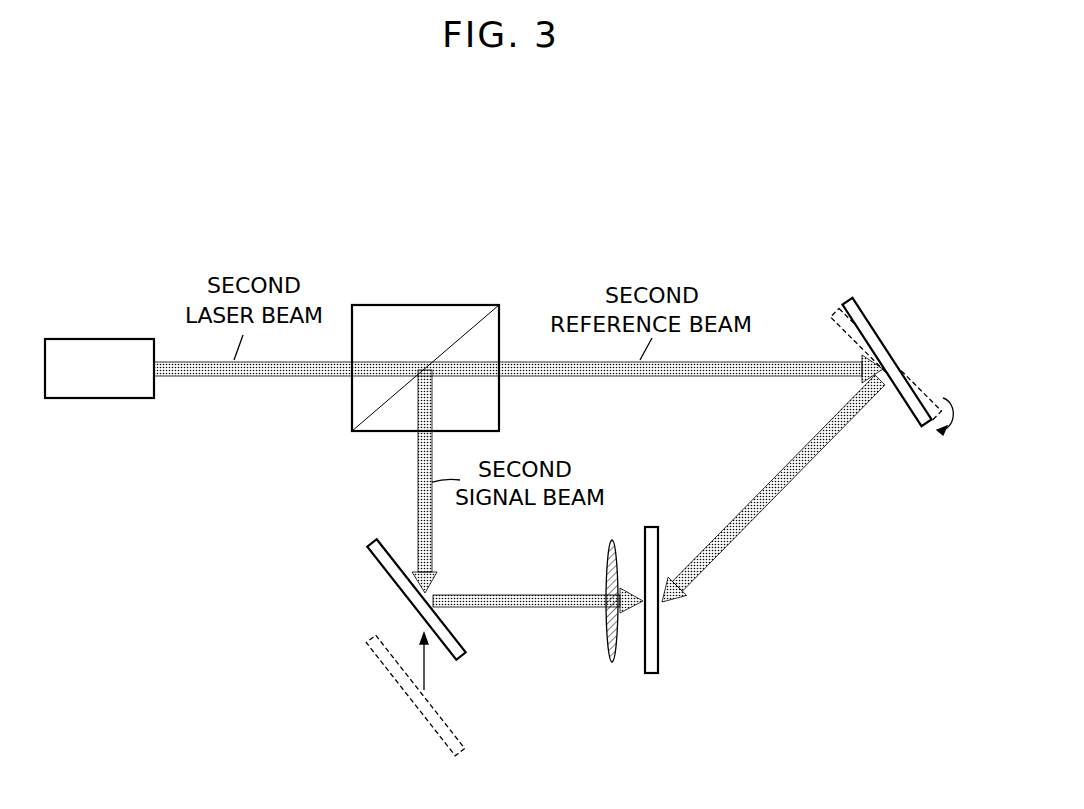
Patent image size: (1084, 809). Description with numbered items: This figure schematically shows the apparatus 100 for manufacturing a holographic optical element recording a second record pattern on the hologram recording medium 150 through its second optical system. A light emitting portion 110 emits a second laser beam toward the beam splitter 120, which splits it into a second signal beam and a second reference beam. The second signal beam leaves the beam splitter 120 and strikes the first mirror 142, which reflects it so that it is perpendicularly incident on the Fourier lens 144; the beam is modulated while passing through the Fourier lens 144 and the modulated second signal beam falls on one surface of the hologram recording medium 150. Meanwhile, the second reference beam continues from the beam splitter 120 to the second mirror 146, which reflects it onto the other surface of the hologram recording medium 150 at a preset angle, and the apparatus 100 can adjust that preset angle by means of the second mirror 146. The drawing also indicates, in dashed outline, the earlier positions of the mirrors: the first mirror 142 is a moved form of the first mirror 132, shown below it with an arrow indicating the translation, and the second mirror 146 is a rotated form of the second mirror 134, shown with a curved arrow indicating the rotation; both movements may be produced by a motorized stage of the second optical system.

The apparatus for manufacturing a holographic optical element 100 is at (755, 223).
The light emitting portion 110 is at (115, 339).
The beam splitter 120 is at (385, 305).
The first mirror 132 is at (458, 735).
The second mirror 134 is at (913, 387).
The first mirror 142 is at (460, 640).
The Fourier lens 144 is at (608, 560).
The second mirror 146 is at (860, 307).
The hologram recording medium 150 is at (658, 645).